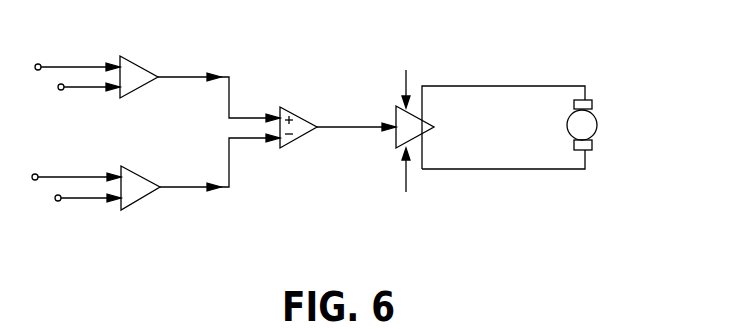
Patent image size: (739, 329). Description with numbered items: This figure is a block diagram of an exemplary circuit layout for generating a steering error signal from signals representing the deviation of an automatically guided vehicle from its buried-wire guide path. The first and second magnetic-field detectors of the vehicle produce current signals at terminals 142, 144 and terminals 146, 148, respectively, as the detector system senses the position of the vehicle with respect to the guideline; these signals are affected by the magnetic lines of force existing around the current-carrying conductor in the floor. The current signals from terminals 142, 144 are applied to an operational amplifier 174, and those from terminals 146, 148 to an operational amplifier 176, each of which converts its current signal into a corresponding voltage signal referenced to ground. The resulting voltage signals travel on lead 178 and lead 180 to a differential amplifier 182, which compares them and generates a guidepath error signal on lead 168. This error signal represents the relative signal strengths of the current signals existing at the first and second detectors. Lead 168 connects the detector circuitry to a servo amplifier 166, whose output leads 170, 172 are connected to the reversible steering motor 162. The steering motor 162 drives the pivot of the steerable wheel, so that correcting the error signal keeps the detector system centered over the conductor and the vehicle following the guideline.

The terminal 142 is at (45, 62).
The terminal 144 is at (65, 91).
The terminal 146 is at (38, 172).
The terminal 148 is at (55, 203).
The operational amplifier 174 is at (145, 68).
The operational amplifier 176 is at (138, 200).
The lead 178 is at (229, 95).
The lead 180 is at (229, 175).
The differential amplifier 182 is at (302, 112).
The lead 168 is at (344, 125).
The servo amplifier 166 is at (424, 131).
The output lead 170 is at (540, 86).
The output lead 172 is at (548, 170).
The steering motor 162 is at (597, 118).